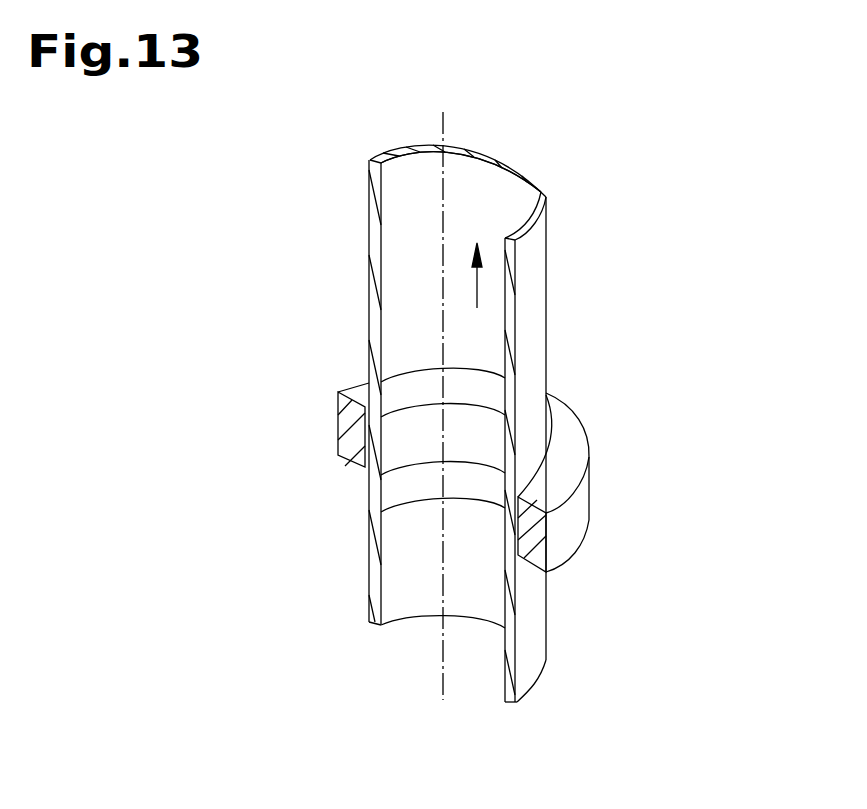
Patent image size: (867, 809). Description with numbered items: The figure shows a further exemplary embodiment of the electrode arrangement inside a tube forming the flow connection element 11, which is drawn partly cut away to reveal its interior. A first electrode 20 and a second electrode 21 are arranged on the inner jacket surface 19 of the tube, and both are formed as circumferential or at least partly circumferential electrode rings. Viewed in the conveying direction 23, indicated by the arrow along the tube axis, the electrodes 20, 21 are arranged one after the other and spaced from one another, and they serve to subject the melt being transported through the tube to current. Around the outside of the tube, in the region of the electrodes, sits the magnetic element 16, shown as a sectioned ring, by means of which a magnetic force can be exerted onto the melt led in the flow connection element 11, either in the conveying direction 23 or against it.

The flow connection element 11 is at (381, 287).
The magnetic element 16 is at (507, 566).
The inner jacket surface 19 is at (419, 232).
The first electrode 20 is at (488, 387).
The second electrode 21 is at (425, 487).
The conveying direction 23 is at (477, 292).